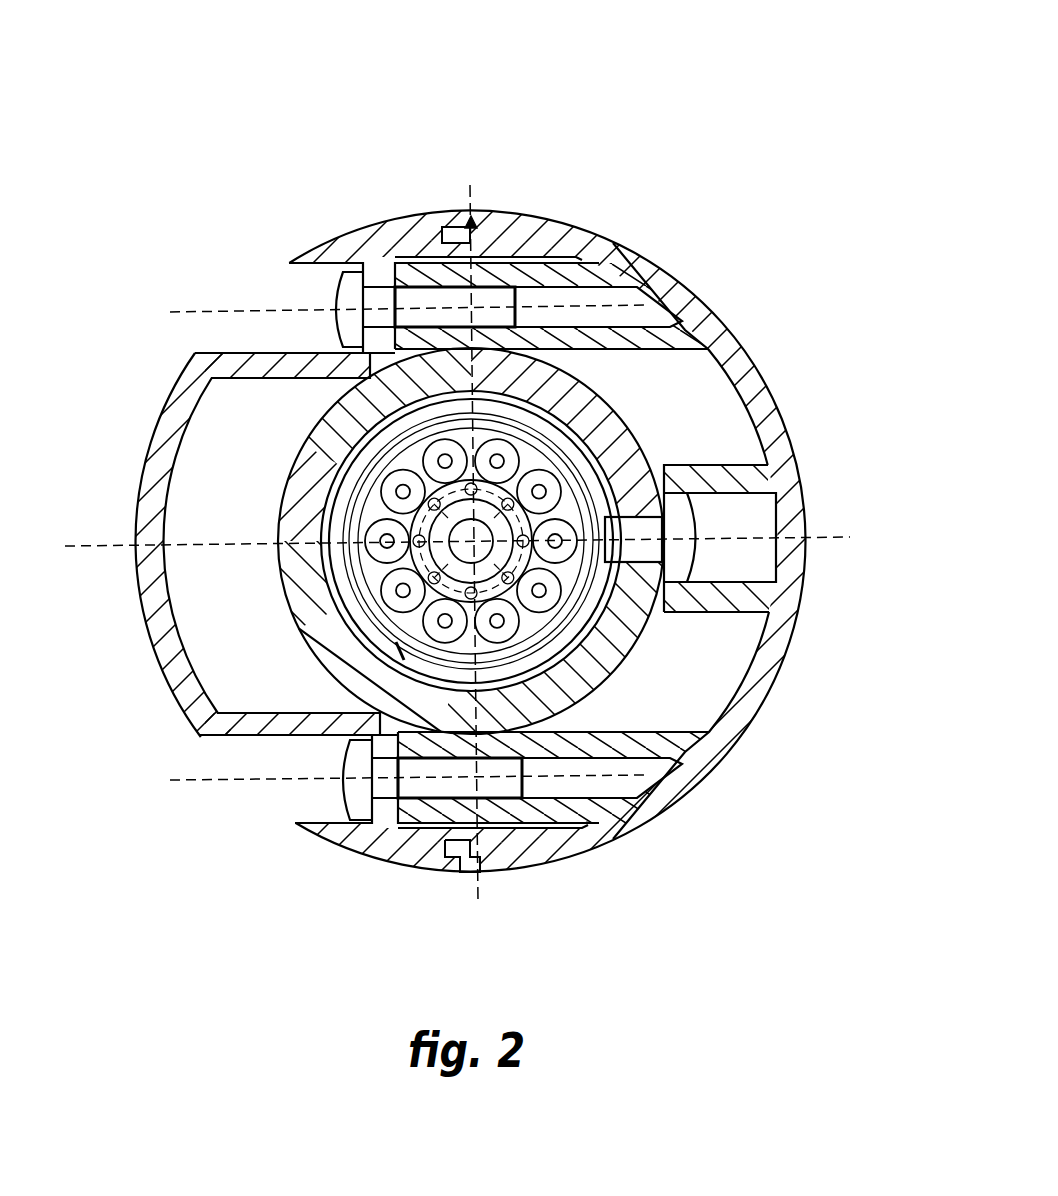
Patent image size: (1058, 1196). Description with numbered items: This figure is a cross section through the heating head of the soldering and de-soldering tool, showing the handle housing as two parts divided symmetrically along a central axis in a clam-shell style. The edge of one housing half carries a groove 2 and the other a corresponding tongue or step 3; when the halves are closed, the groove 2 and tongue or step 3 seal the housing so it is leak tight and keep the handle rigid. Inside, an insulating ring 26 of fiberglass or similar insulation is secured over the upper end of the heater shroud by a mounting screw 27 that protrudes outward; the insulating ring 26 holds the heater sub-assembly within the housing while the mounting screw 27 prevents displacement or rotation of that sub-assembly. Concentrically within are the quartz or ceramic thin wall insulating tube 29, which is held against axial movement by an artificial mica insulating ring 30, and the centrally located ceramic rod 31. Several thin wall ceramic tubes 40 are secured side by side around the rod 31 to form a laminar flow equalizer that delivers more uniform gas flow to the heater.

The groove 2 is at (471, 217).
The tongue or step 3 is at (637, 125).
The insulating ring 26 is at (527, 370).
The mounting screw 27 is at (617, 527).
The thin wall insulating tube 29 is at (567, 483).
The insulating ring 30 is at (555, 437).
The ceramic rod 31 is at (508, 547).
The thin wall ceramic tubes 40 is at (672, 757).